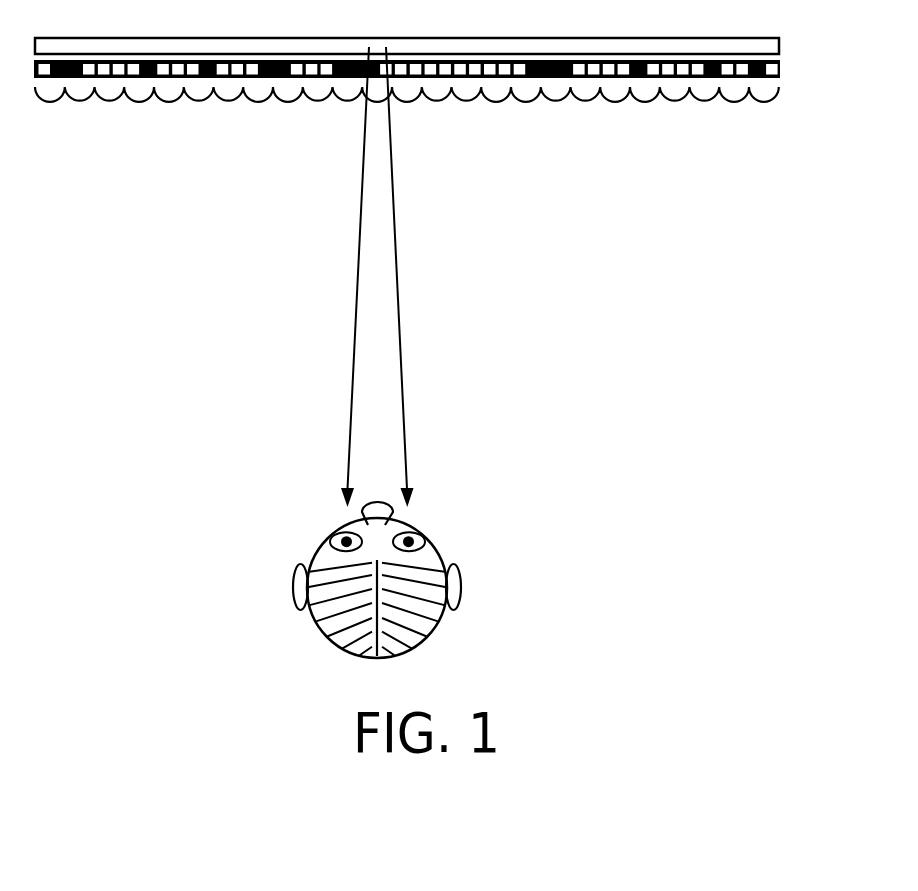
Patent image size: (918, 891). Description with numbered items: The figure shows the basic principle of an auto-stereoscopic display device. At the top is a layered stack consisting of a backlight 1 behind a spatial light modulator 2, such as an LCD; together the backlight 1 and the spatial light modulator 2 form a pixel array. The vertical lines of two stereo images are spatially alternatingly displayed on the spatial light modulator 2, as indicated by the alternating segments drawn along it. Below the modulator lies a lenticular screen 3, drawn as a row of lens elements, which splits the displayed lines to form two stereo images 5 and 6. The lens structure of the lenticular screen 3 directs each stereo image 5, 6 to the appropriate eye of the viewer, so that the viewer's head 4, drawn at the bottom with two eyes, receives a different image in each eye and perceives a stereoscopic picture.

The backlight 1 is at (780, 45).
The spatial light modulator 2 is at (780, 68).
The lenticular screen 3 is at (780, 88).
The viewer's head 4 is at (437, 542).
The stereo image 5 is at (353, 348).
The stereo image 6 is at (403, 348).